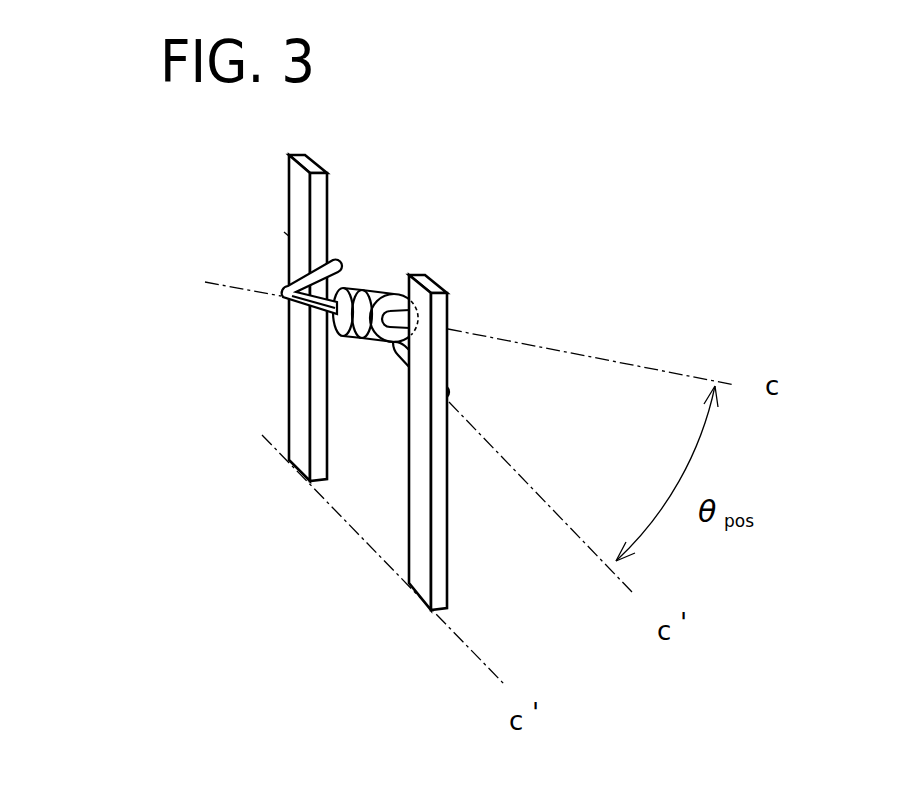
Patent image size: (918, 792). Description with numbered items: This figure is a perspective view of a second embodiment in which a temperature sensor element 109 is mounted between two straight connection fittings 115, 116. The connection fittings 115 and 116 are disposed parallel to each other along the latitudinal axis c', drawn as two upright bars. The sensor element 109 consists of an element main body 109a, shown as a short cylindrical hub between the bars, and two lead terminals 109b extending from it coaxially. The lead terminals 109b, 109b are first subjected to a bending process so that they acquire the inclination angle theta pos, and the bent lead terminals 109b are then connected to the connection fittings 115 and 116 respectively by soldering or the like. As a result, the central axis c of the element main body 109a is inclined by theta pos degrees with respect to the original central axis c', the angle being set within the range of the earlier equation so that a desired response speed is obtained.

The temperature sensor element 109 is at (229, 397).
The element main body 109a is at (337, 337).
The lead terminal 109b is at (283, 290).
The connection fitting 115 is at (297, 192).
The connection fitting 116 is at (433, 282).